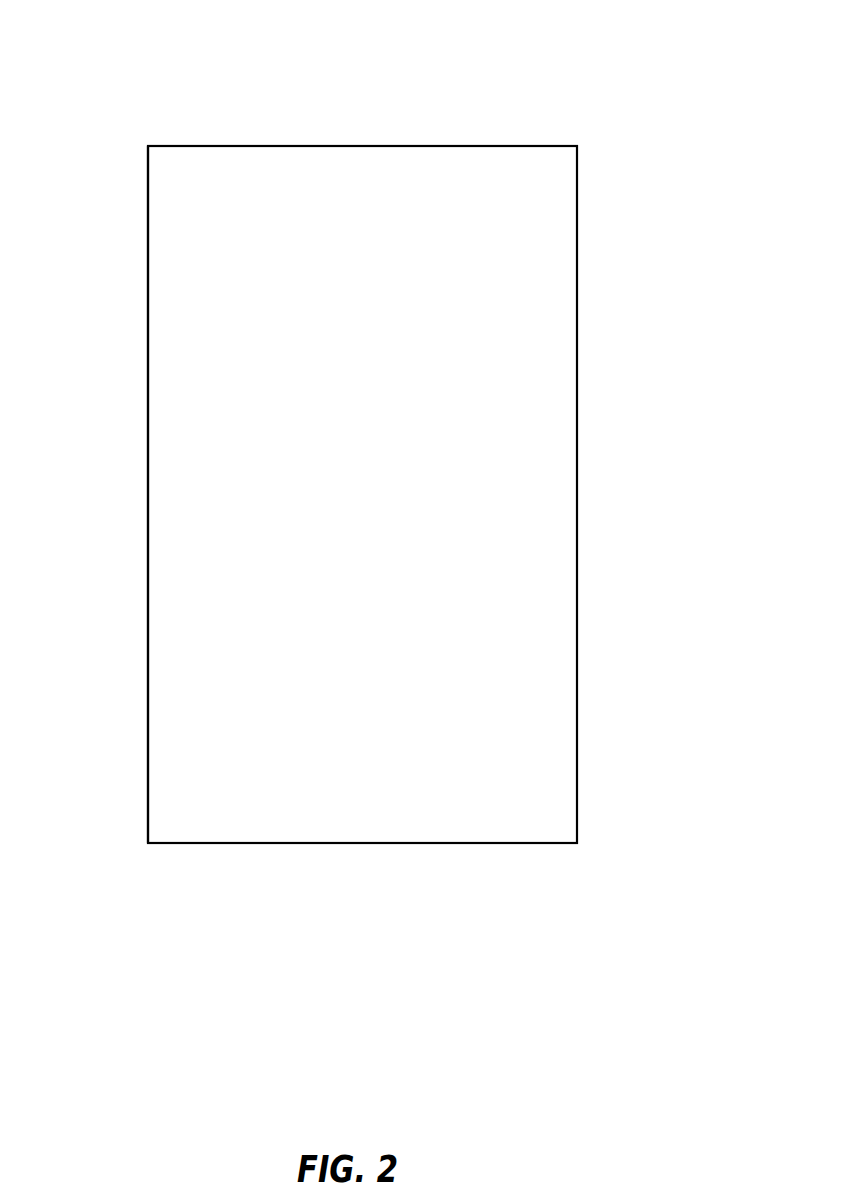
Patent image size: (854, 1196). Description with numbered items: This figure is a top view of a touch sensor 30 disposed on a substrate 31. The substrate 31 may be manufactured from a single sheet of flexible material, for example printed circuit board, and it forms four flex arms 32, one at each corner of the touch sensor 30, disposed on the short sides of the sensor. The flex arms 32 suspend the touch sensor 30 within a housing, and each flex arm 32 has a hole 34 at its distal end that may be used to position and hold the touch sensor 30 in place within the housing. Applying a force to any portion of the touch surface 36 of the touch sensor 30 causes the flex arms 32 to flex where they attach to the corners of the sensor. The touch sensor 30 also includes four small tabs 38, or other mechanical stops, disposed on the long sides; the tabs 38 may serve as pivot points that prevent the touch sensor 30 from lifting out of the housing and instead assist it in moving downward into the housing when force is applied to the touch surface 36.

The touch sensor 30 is at (600, 315).
The substrate 31 is at (497, 525).
The flex arms 32 is at (195, 96).
The hole 34 is at (284, 95).
The touch surface 36 is at (147, 440).
The tabs 38 is at (105, 182).